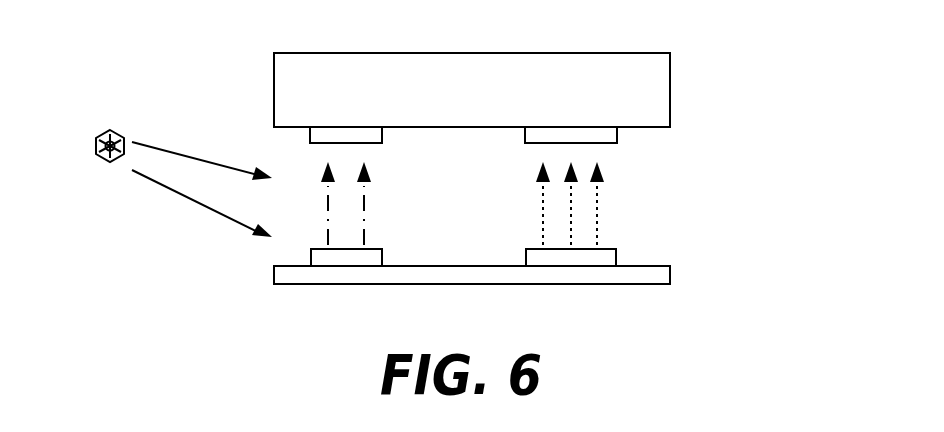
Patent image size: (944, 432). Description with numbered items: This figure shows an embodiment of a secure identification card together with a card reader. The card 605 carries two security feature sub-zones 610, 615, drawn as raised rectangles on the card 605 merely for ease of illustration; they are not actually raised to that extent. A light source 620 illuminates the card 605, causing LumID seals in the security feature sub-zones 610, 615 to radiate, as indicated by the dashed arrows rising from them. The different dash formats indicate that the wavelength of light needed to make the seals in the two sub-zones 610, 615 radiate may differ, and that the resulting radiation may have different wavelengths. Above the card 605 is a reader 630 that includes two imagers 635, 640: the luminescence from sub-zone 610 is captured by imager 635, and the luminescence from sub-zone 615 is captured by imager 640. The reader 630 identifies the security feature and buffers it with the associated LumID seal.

The card 605 is at (670, 271).
The security feature sub-zone 610 is at (348, 258).
The security feature sub-zone 615 is at (567, 257).
The light source 620 is at (100, 157).
The reader 630 is at (528, 53).
The imager 635 is at (382, 130).
The imager 640 is at (617, 137).